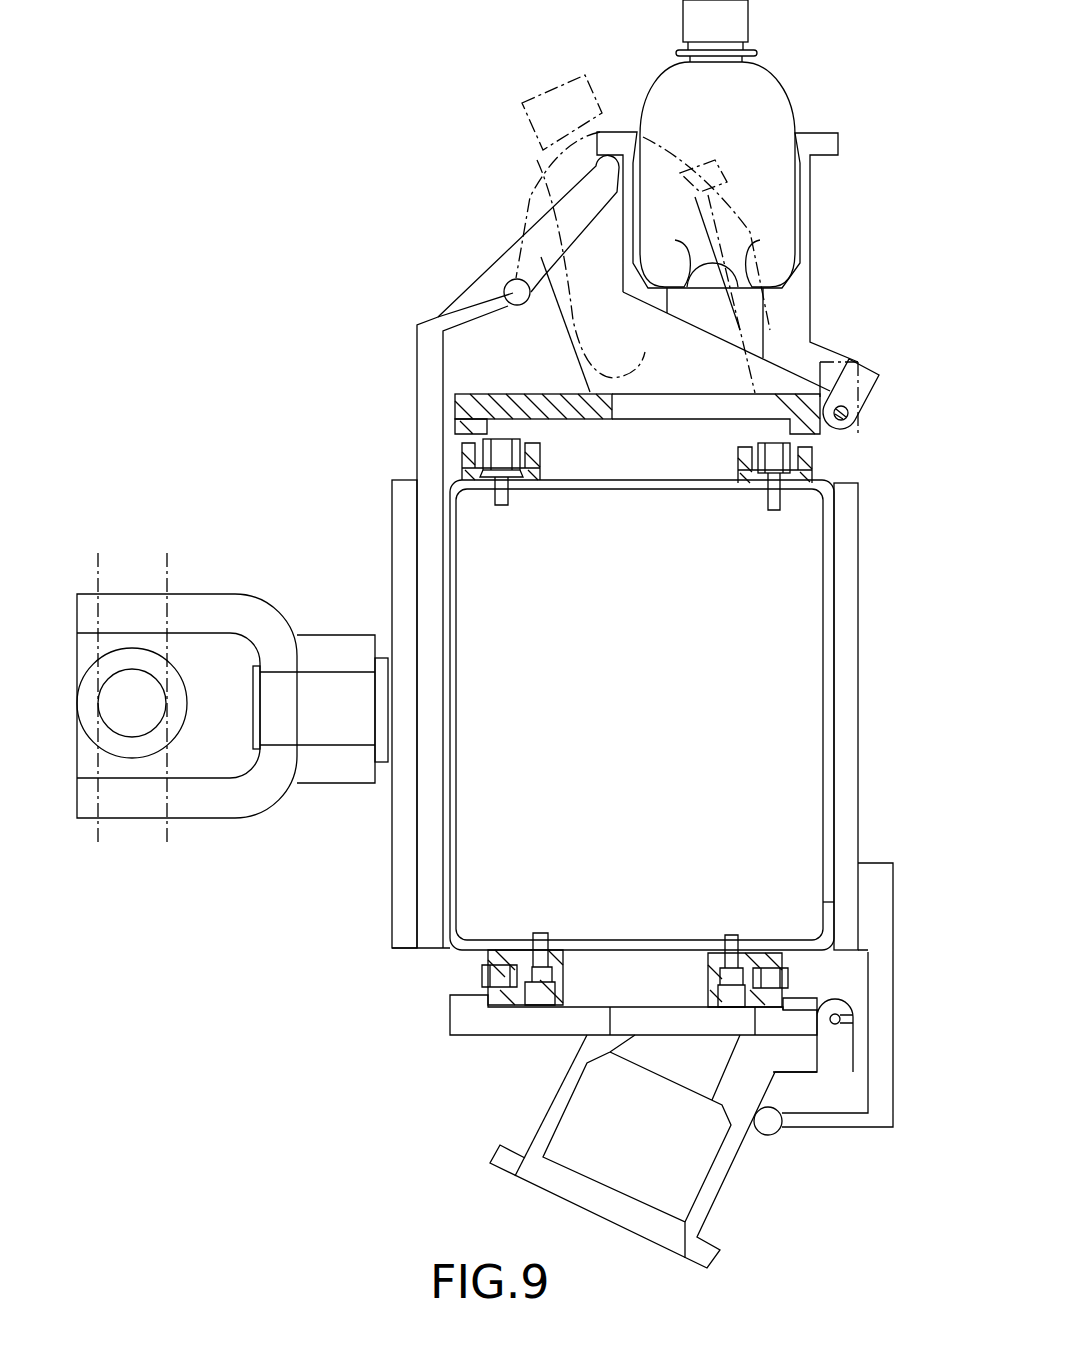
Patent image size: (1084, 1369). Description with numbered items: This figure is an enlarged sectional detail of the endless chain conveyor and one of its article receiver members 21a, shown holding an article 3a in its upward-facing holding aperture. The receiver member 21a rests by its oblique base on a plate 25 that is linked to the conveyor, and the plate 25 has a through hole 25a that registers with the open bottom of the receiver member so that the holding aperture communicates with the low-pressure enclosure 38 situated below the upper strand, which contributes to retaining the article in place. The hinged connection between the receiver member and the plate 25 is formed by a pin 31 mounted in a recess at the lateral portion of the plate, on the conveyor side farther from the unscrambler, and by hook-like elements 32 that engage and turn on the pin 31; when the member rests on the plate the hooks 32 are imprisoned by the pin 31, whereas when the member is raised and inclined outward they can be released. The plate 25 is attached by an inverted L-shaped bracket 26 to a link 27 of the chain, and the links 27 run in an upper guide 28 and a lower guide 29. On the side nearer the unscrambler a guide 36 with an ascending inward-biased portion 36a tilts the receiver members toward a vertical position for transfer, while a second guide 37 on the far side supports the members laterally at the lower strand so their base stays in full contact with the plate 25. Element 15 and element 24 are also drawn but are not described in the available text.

The article 3a is at (762, 106).
The clevis joint 15 is at (200, 780).
The article receiver member 21a is at (810, 272).
The inclined guide plate 24 is at (820, 346).
The plate 25 is at (605, 406).
The through hole 25a is at (672, 406).
The bracket 26 is at (828, 436).
The link 27 is at (762, 472).
The upper guide 28 is at (815, 470).
The lower guide 29 is at (505, 1000).
The pin 31 is at (858, 415).
The hook-like element 32 is at (850, 382).
The guide 36 is at (503, 295).
The ascending portion of the guide 36a is at (555, 233).
The second guide 37 is at (795, 1120).
The low-pressure enclosure 38 is at (722, 813).